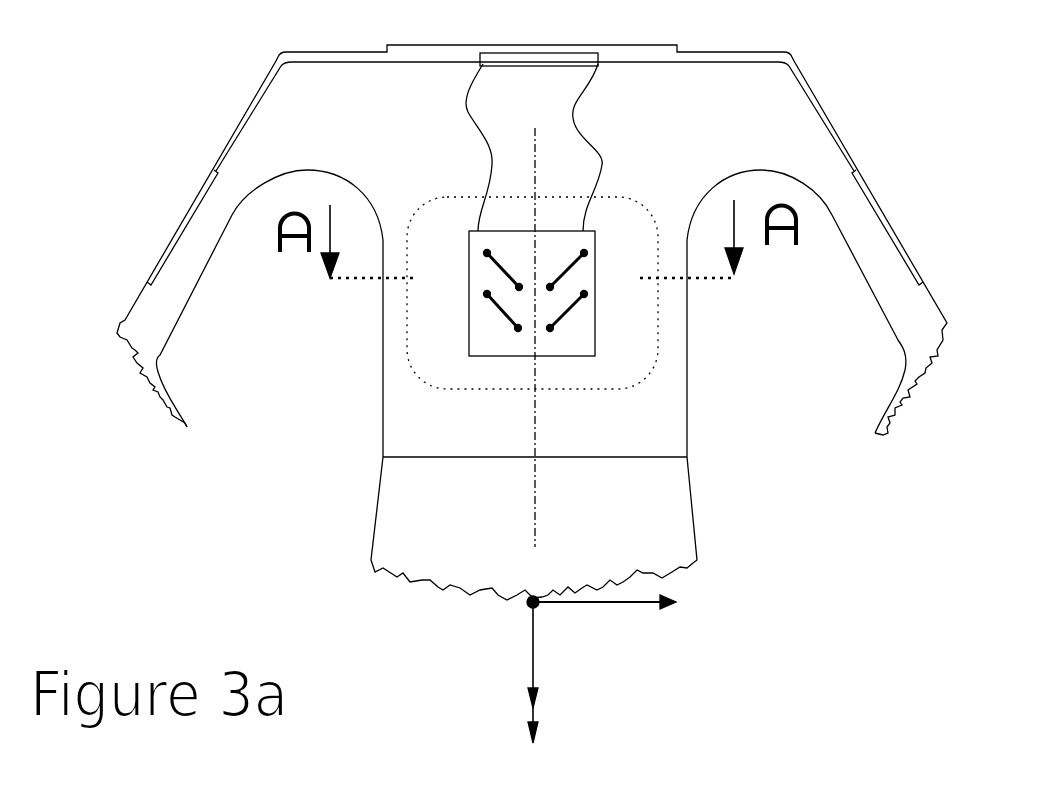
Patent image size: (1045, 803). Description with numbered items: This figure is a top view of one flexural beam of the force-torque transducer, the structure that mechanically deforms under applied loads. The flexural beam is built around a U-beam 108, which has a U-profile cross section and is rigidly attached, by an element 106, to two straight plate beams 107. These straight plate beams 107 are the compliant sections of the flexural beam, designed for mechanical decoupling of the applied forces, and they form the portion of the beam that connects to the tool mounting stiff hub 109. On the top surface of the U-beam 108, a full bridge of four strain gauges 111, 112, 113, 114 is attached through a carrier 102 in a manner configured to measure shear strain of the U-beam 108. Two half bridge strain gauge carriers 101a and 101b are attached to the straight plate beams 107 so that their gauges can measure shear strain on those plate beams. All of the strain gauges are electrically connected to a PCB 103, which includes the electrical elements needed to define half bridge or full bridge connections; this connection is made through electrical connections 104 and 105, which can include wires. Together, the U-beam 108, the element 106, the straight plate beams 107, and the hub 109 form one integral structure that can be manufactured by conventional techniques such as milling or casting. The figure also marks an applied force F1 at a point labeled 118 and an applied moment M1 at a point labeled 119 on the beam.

The right arm 101a is at (871, 207).
The left arm 101b is at (187, 217).
The contact pad 102 is at (580, 342).
The top rail 103 is at (632, 54).
The corner 104 is at (293, 57).
The central strip 105 is at (518, 117).
The body 106 is at (672, 132).
The slot 107 is at (174, 292).
The contact region 108 is at (436, 323).
The lower body 109 is at (635, 536).
The contact pin 111 is at (572, 265).
The contact pin 112 is at (572, 310).
The contact pin 113 is at (497, 266).
The contact pin 114 is at (500, 312).
The force F1 118 is at (590, 601).
The moment M1 119 is at (533, 648).